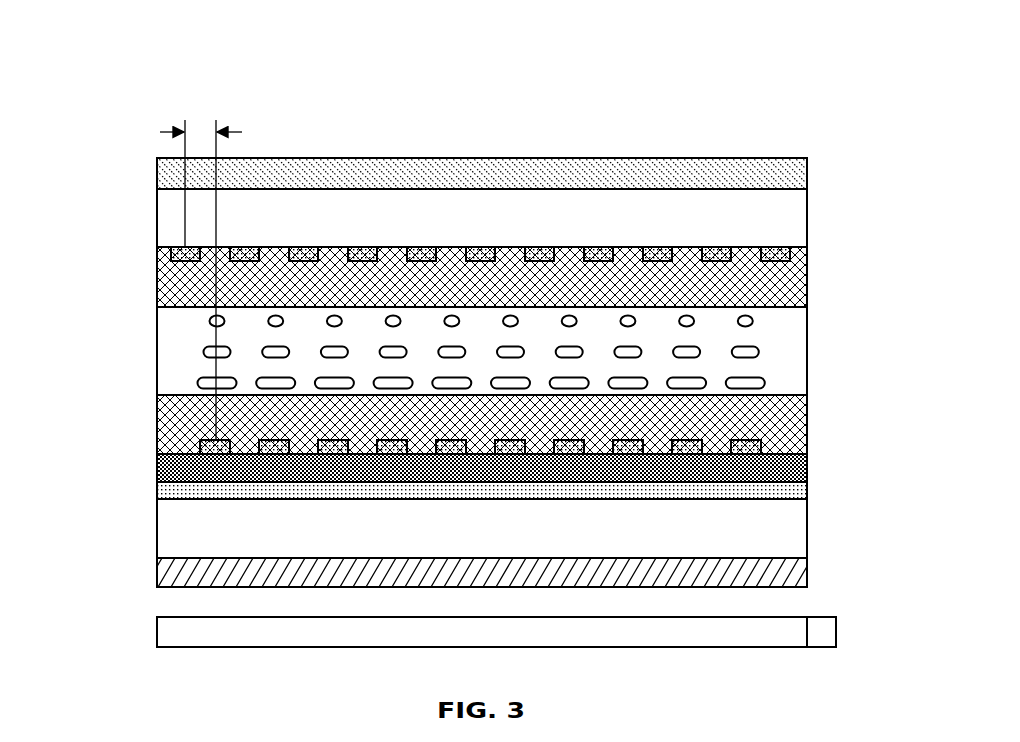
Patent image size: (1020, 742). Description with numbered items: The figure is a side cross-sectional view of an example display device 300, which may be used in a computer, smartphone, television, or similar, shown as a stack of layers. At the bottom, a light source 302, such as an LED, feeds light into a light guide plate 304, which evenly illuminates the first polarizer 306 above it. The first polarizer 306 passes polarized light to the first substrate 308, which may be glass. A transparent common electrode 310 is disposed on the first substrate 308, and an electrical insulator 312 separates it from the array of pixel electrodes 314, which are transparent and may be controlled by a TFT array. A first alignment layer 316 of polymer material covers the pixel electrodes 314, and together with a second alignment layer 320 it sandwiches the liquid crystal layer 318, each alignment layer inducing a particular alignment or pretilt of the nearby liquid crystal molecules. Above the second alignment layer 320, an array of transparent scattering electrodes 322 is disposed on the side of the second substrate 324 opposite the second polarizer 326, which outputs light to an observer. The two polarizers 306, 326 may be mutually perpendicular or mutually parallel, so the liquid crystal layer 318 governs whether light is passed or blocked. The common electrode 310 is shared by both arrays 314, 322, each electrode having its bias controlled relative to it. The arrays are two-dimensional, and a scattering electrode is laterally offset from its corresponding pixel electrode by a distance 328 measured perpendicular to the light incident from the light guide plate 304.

The device 300 is at (768, 103).
The light source 302 is at (836, 632).
The light guide plate 304 is at (157, 634).
The first polarizer 306 is at (157, 578).
The first substrate 308 is at (157, 530).
The common electrode 310 is at (157, 494).
The electrical insulator 312 is at (157, 467).
The array of pixel electrodes 314 is at (772, 444).
The first alignment layer 316 is at (157, 420).
The liquid crystal layer 318 is at (180, 350).
The second alignment layer 320 is at (157, 290).
The array of scattering electrodes 322 is at (808, 262).
The second substrate 324 is at (157, 220).
The second polarizer 326 is at (157, 172).
The distance 328 is at (201, 268).